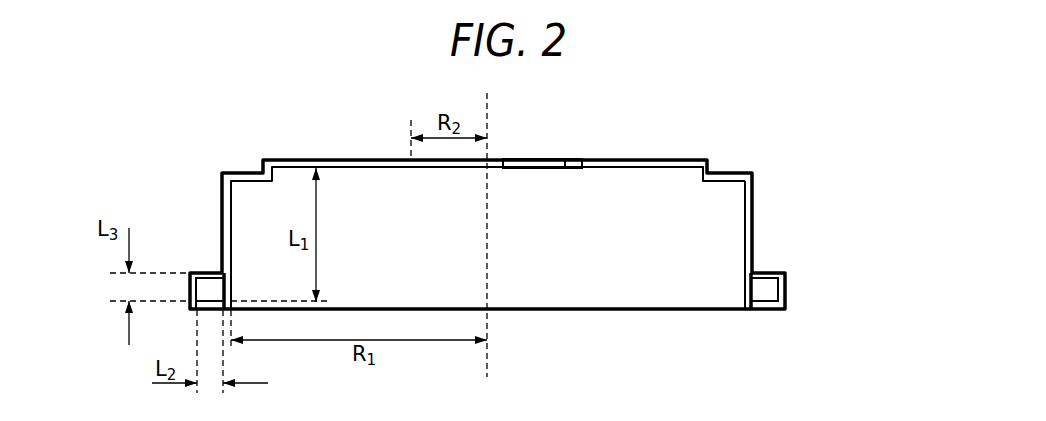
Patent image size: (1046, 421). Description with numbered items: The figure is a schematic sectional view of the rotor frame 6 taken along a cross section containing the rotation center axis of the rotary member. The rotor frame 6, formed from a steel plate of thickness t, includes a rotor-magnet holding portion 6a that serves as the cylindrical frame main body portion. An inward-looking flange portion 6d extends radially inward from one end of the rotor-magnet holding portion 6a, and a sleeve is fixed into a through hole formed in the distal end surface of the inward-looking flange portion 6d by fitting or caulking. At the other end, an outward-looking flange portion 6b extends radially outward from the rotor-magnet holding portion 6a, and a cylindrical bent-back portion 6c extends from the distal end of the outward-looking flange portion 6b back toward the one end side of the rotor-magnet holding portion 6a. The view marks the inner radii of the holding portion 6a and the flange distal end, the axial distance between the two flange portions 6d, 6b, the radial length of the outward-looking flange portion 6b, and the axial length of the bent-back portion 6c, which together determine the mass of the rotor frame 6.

The rotor frame 6 is at (737, 152).
The rotor-magnet holding portion 6a is at (745, 238).
The outward-looking flange portion 6b is at (763, 302).
The bent-back portion 6c is at (787, 287).
The inward-looking flange portion 6d is at (545, 163).